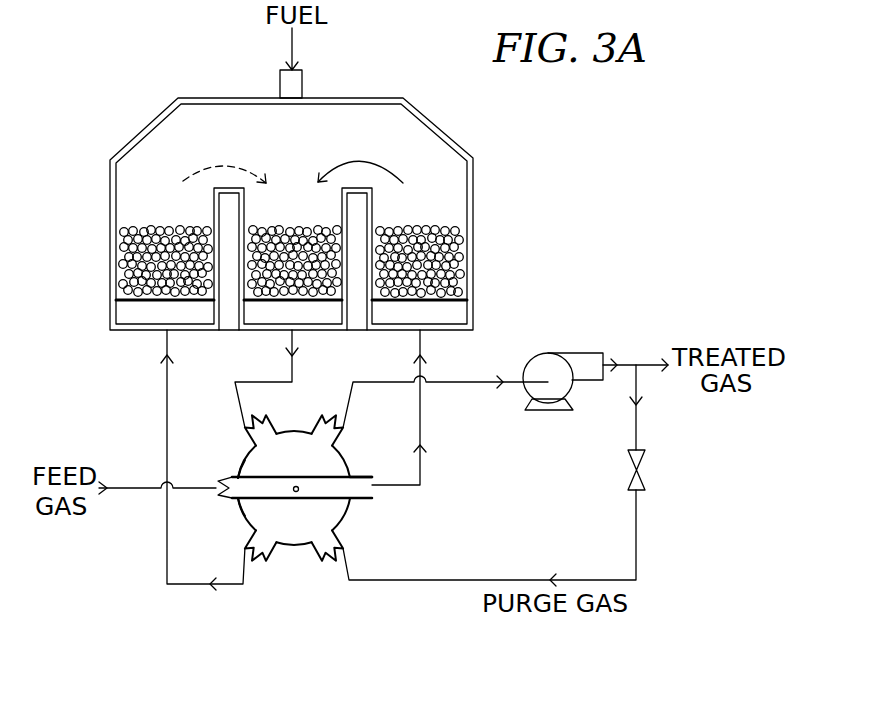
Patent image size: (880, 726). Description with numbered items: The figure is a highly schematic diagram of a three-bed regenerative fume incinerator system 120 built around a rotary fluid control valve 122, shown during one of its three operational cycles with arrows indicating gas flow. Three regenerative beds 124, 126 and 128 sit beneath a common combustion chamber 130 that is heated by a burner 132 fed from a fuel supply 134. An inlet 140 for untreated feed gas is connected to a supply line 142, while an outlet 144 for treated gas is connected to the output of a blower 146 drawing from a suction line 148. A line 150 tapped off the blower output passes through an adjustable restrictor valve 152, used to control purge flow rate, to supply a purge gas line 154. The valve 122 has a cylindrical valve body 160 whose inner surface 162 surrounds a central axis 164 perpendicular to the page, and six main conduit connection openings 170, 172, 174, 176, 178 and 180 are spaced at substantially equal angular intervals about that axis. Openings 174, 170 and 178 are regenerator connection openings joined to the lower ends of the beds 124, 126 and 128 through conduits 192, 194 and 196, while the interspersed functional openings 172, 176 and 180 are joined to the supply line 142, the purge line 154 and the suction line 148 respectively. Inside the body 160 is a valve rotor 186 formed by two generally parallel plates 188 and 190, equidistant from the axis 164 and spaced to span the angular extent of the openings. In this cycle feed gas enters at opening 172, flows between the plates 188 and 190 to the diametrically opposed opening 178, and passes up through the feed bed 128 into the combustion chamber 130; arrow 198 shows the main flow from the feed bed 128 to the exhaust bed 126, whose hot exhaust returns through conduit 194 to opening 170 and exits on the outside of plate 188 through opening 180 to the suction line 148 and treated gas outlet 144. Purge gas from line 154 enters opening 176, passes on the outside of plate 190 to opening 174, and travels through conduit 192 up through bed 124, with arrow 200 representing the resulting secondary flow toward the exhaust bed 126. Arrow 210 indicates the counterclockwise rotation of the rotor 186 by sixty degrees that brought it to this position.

The regenerative incinerator system 120 is at (648, 155).
The rotary fluid control valve 122 is at (314, 630).
The regenerative bed 124 is at (116, 276).
The regenerative bed 126 is at (272, 222).
The regenerative bed 128 is at (465, 250).
The combustion chamber 130 is at (328, 135).
The burner 132 is at (280, 84).
The fuel supply 134 is at (292, 48).
The inlet 140 is at (102, 492).
The supply line 142 is at (147, 486).
The outlet 144 is at (665, 364).
The blower 146 is at (574, 353).
The suction line 148 is at (480, 382).
The purge gas line 150 is at (640, 432).
The adjustable restrictor valve 152 is at (642, 474).
The purge gas line 154 is at (612, 578).
The valve body 160 is at (286, 550).
The inner surface 162 is at (288, 431).
The central axis 164 is at (285, 458).
The regenerator connection opening 170 is at (254, 430).
The functional connection opening 172 is at (225, 522).
The regenerator connection opening 174 is at (255, 546).
The functional connection opening 176 is at (340, 547).
The regenerator connection opening 178 is at (358, 466).
The functional connection opening 180 is at (345, 424).
The valve rotor 186 is at (293, 515).
The plate 188 is at (229, 466).
The plate 190 is at (350, 501).
The conduit 192 is at (167, 372).
The conduit 194 is at (277, 380).
The conduit 196 is at (423, 430).
The arrow 198 is at (405, 157).
The arrow 200 is at (212, 174).
The arrow 210 is at (233, 471).